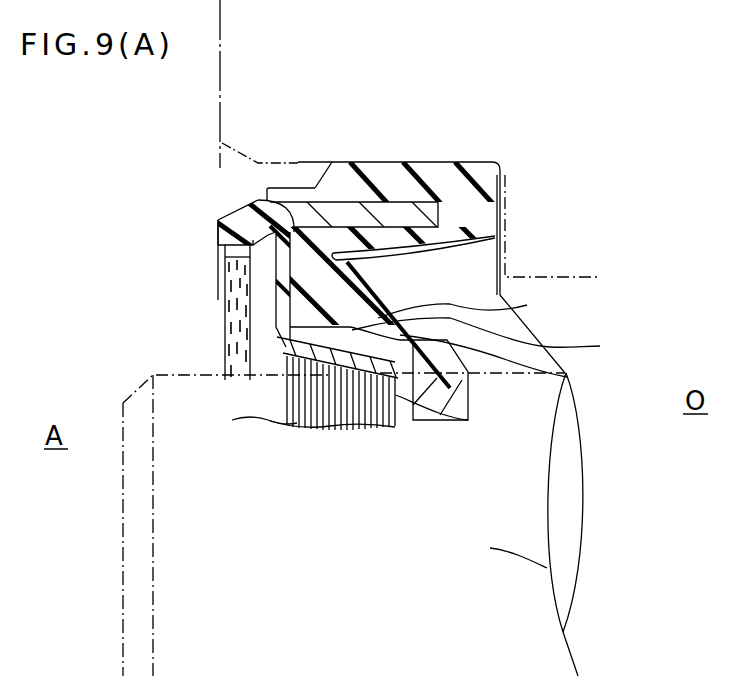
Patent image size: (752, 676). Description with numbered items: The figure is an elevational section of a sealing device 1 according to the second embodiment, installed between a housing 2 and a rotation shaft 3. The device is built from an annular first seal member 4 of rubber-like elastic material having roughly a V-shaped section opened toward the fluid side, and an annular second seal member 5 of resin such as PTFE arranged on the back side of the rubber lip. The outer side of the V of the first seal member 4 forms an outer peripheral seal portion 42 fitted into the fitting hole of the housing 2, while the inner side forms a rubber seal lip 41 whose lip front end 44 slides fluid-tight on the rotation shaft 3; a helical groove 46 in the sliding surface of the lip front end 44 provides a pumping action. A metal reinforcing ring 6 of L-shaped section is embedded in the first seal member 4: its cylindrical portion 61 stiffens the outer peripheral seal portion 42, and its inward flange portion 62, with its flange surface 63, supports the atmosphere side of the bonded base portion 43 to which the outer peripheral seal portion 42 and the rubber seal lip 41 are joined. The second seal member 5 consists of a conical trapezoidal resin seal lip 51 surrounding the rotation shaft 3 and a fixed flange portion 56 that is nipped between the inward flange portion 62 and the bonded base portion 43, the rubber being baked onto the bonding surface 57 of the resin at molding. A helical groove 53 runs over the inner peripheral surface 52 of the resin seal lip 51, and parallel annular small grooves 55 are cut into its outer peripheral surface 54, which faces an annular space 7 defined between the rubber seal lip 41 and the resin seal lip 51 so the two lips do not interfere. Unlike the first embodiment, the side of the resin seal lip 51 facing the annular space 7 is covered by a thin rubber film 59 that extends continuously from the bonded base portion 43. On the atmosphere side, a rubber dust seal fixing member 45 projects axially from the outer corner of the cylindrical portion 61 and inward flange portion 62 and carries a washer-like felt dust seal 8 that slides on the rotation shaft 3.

The sealing device 1 is at (520, 102).
The housing 2 is at (221, 57).
The rotation shaft 3 is at (490, 548).
The first seal member 4 is at (480, 250).
The second seal member 5 is at (253, 321).
The reinforcing ring 6 is at (218, 238).
The annular space 7 is at (485, 340).
The dust seal 8 is at (233, 315).
The rubber seal lip 41 is at (471, 303).
The outer peripheral seal portion 42 is at (436, 156).
The bonded base portion 43 is at (322, 288).
The lip front end 44 is at (467, 378).
The dust seal fixing member 45 is at (228, 216).
The helical groove 46 is at (470, 432).
The resin seal lip 51 is at (398, 398).
The inner peripheral surface 52 is at (360, 398).
The helical groove 53 is at (312, 396).
The outer peripheral surface 54 is at (567, 373).
The annular small grooves 55 is at (290, 337).
The fixed flange portion 56 is at (258, 222).
The bonding surface 57 is at (303, 262).
The rubber film 59 is at (505, 277).
The cylindrical portion 61 is at (393, 202).
The inward flange portion 62 is at (262, 277).
The flange surface 63 is at (272, 297).